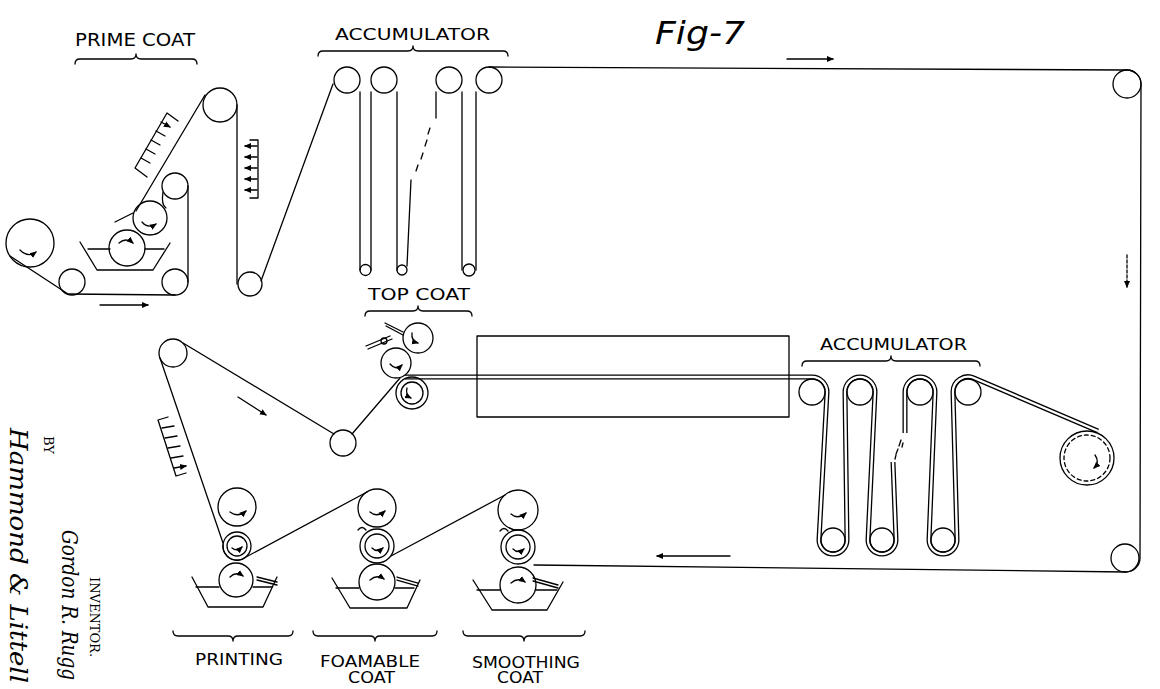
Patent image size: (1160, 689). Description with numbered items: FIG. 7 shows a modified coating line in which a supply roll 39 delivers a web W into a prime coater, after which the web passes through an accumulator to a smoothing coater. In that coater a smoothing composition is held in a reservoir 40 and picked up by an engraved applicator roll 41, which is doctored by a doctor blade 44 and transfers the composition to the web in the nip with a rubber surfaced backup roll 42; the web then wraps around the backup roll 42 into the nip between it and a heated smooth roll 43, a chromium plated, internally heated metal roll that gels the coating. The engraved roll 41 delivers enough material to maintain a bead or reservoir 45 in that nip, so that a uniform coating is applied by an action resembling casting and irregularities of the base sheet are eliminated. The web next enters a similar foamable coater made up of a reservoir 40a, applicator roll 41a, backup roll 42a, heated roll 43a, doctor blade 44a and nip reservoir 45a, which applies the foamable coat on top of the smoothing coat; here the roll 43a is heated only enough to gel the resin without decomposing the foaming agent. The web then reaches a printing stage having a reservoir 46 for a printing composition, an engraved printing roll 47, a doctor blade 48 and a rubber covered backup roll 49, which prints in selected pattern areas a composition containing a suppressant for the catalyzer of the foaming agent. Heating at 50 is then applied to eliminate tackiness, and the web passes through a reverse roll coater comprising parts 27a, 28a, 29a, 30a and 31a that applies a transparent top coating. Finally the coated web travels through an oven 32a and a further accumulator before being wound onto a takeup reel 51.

The supply roll 39 is at (25, 220).
The heating 50 is at (164, 458).
The rubber covered backup roll 49 is at (257, 527).
The engraved printing roll 47 is at (222, 571).
The reservoir for printing composition 46 is at (192, 592).
The doctor blade 48 is at (272, 581).
The heated smooth roll 43a is at (386, 492).
The rubber surfaced backup roll 42a is at (393, 536).
The reservoir of coating material in nip 45a is at (360, 531).
The applicator roll 41a is at (359, 573).
The doctor blade 44a is at (402, 577).
The reservoir of coating composition 40a is at (400, 606).
The heated smooth roll 43 is at (535, 503).
The rubber surfaced backup roll 42 is at (536, 547).
The reservoir of coating material in nip 45 is at (503, 533).
The applicator roll 41 is at (501, 574).
The doctor blade 44 is at (560, 588).
The reservoir of coating composition 40 is at (548, 606).
The reverse roll coater part 30a is at (385, 326).
The reverse roll coater part 31a is at (373, 346).
The reverse roll coater part 28a is at (383, 371).
The reverse roll coater part 29a is at (433, 338).
The reverse roll coater part 27a is at (427, 406).
The oven 32a is at (592, 336).
The takeup reel 51 is at (1066, 472).
The web W is at (50, 286).